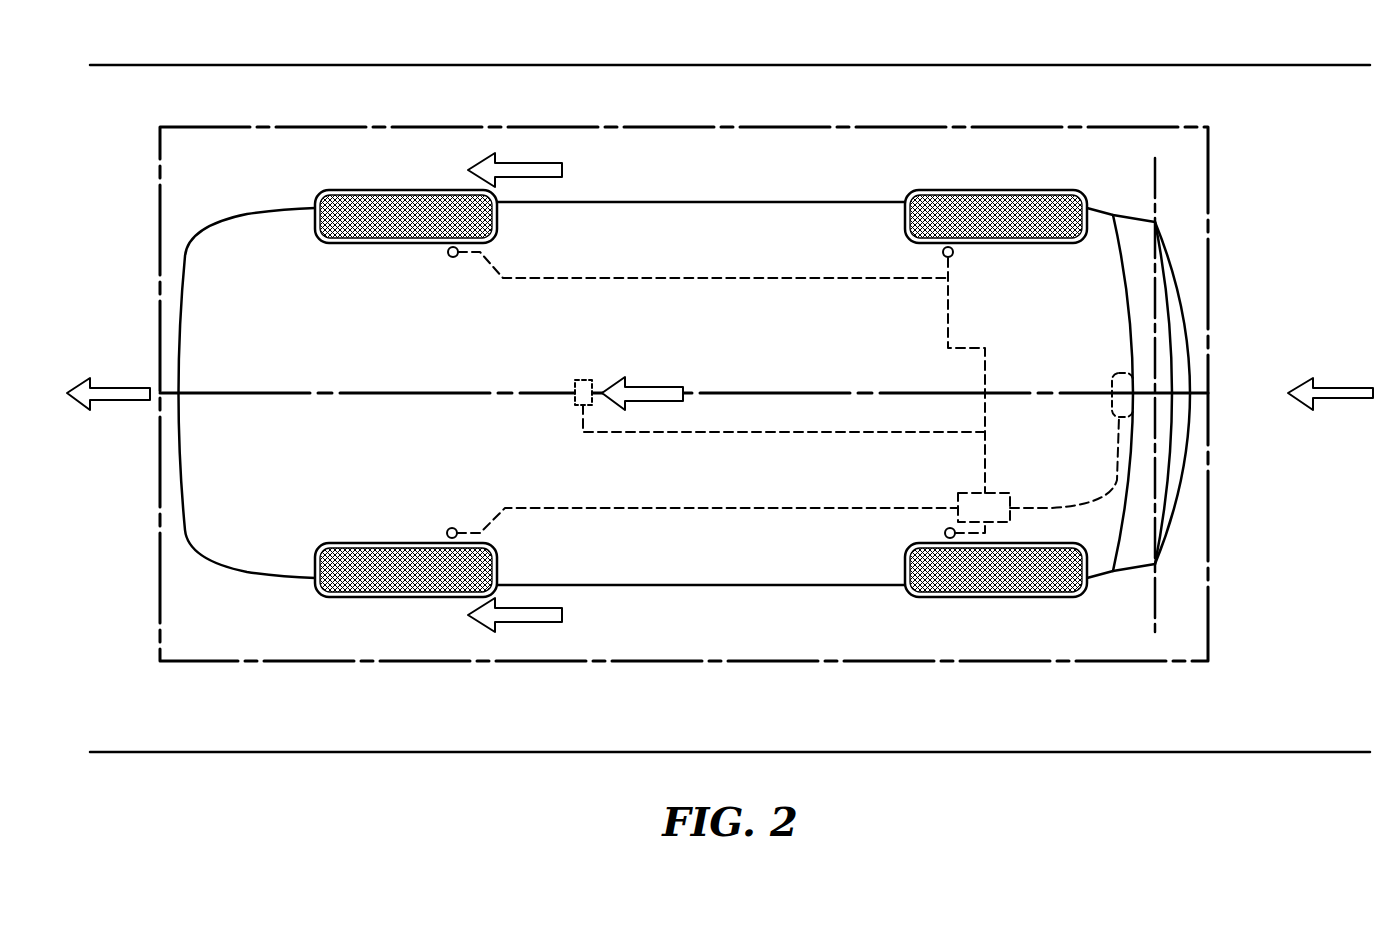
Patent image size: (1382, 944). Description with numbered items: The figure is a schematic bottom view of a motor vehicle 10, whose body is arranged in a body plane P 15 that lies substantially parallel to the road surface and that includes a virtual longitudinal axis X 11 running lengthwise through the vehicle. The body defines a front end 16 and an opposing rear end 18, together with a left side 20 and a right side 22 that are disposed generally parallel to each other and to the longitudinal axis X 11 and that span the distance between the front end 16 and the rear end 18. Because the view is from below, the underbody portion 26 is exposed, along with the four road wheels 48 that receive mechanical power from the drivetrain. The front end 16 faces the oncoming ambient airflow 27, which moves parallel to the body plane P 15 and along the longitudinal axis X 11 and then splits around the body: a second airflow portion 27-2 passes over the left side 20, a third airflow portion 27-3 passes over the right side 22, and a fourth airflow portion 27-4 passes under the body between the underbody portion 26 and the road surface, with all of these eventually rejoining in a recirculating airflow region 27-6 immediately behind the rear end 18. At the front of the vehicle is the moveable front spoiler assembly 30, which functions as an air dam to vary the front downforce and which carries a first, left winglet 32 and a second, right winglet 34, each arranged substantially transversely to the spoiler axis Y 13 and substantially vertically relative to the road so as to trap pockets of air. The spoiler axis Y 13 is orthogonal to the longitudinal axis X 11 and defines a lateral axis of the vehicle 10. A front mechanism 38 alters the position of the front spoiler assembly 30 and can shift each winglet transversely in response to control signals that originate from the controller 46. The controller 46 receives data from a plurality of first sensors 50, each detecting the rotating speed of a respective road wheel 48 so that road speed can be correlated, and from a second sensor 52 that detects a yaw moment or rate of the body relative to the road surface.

The motor vehicle 10 is at (694, 430).
The longitudinal axis X 11 is at (1053, 393).
The spoiler axis Y 13 is at (1150, 185).
The body plane P 15 is at (356, 662).
The front end 16 is at (1192, 456).
The rear end 18 is at (176, 326).
The left side 20 is at (780, 586).
The right side 22 is at (700, 202).
The underbody portion 26 is at (870, 387).
The ambient airflow 27 is at (1335, 395).
The second airflow portion 27-2 is at (527, 627).
The third airflow portion 27-3 is at (530, 163).
The fourth airflow portion 27-4 is at (655, 387).
The recirculating airflow region 27-6 is at (117, 402).
The front spoiler assembly 30 is at (1172, 348).
The first winglet 32 is at (1155, 222).
The second winglet 34 is at (1138, 577).
The front mechanism 38 is at (1112, 406).
The controller 46 is at (1012, 500).
The road wheels 48 is at (366, 190).
The first sensors 50 is at (448, 253).
The second sensor 52 is at (573, 398).